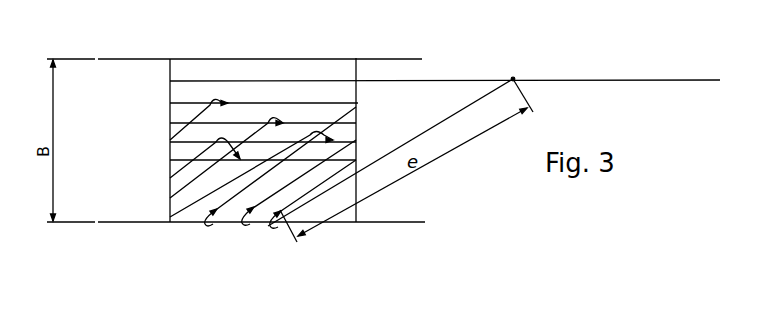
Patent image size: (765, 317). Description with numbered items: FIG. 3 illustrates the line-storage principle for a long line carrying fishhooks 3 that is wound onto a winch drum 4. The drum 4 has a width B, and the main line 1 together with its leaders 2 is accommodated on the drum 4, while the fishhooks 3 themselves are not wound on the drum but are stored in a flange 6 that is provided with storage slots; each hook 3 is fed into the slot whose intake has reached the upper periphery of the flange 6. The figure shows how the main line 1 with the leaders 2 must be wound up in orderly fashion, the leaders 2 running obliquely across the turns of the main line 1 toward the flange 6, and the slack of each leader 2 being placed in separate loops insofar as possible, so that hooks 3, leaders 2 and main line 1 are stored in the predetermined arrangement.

The main line 1 is at (558, 79).
The leader 2 is at (483, 97).
The fishhook 3 is at (267, 223).
The winch drum 4 is at (168, 90).
The flange 6 is at (398, 222).